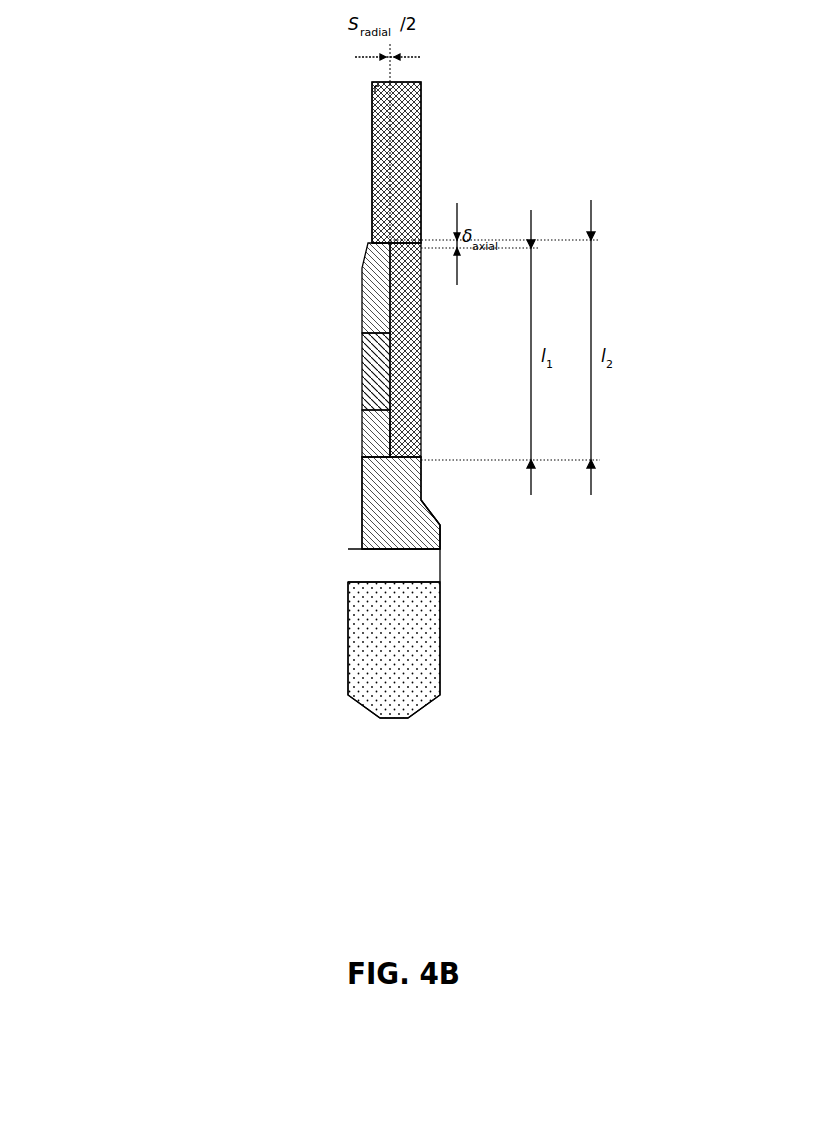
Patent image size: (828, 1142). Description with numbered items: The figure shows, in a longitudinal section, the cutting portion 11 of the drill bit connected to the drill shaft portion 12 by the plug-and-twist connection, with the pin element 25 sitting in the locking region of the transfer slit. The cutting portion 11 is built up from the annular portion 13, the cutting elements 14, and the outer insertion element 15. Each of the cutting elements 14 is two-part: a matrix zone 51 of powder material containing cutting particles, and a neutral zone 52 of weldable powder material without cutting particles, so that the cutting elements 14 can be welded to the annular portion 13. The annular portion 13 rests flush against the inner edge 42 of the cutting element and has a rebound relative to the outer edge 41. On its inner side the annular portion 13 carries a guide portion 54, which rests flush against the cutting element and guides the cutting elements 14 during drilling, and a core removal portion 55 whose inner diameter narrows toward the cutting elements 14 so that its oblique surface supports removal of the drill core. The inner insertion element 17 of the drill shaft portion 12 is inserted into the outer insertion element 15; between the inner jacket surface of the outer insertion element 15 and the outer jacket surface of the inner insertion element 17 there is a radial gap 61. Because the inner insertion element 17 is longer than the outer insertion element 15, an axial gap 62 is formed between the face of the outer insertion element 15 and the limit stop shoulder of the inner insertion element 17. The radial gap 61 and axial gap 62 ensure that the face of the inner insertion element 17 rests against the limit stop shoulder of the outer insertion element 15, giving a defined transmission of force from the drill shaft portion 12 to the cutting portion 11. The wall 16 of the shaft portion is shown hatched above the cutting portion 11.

The cutting portion 11 is at (173, 494).
The drill shaft portion 12 is at (173, 137).
The annular portion 13 is at (388, 513).
The cutting elements 14 is at (396, 762).
The outer insertion element 15 is at (372, 434).
The cylindrical wall 16 is at (402, 132).
The inner insertion element 17 is at (408, 341).
The pin element 25 is at (362, 378).
The outer edge 41 is at (346, 620).
The inner edge 42 is at (444, 620).
The matrix zone 51 is at (410, 652).
The neutral zone 52 is at (358, 568).
The guide portion 54 is at (443, 541).
The core removal portion 55 is at (438, 518).
The radial gap 61 is at (396, 433).
The axial gap 62 is at (366, 241).